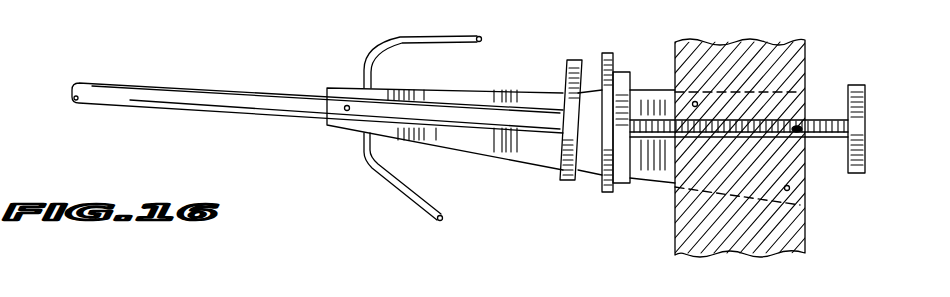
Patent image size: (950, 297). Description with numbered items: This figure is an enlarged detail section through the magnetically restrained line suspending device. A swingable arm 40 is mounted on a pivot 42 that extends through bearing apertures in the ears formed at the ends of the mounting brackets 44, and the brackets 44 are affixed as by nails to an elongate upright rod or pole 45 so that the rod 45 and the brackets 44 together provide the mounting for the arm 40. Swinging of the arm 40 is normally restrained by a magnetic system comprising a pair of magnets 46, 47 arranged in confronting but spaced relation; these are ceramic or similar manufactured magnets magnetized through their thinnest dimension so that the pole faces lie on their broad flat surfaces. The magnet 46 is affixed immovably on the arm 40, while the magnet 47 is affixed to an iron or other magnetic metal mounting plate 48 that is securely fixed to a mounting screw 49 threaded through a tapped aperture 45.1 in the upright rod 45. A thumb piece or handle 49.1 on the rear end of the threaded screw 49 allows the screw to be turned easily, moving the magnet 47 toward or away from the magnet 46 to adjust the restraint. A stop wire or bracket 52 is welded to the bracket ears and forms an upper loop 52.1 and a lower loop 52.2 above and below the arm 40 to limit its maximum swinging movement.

The swingable arm 40 is at (222, 106).
The pivot 42 is at (347, 106).
The mounting brackets 44 is at (466, 95).
The rod or pole 45 is at (792, 72).
The tapped aperture 45.1 is at (801, 128).
The magnet 46 is at (573, 60).
The magnet 47 is at (608, 193).
The mounting plate 48 is at (622, 74).
The mounting screw 49 is at (641, 120).
The thumb piece or handle 49.1 is at (858, 174).
The stop wire or bracket 52 is at (388, 200).
The loop 52.1 is at (480, 38).
The loop 52.2 is at (482, 245).